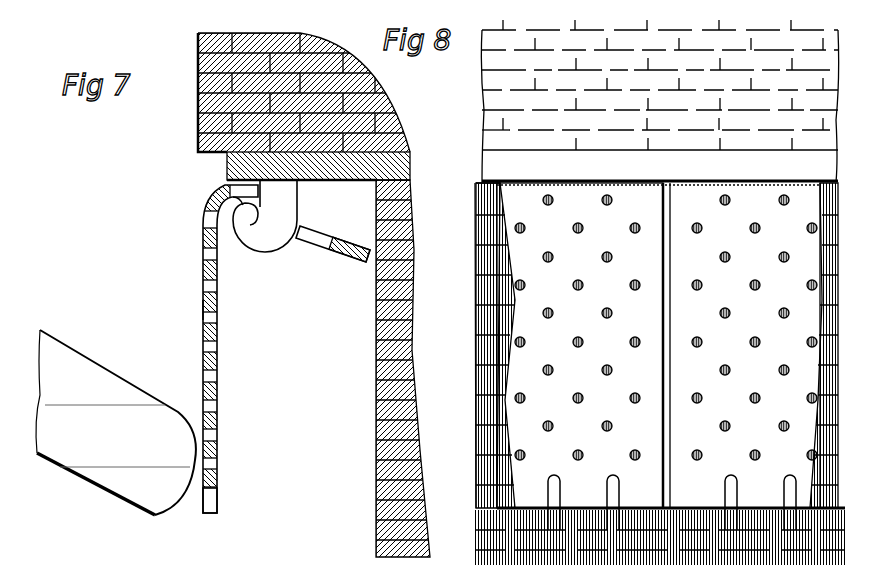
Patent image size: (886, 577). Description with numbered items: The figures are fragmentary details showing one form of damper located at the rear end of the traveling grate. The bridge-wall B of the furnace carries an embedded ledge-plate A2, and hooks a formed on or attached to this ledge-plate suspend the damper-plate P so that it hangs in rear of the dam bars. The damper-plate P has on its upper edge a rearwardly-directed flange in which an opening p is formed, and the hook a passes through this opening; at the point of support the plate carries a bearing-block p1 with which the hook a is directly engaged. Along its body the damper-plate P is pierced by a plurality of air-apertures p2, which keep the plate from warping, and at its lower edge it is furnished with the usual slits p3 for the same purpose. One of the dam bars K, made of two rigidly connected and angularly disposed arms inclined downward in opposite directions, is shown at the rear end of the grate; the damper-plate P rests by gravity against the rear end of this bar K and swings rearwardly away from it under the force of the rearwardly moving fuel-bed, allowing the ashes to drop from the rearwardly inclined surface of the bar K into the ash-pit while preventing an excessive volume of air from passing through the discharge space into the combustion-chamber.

In FIG. 7, the bridge-wall B is at (329, 48).
In FIG. 8, the bridge-wall B is at (791, 30).
In FIG. 7, the ledge-plate A2 is at (388, 165).
In FIG. 7, the damper-plate P is at (223, 353).
In FIG. 8, the damper-plate P is at (660, 374).
In FIG. 7, the bearing-block p1 is at (240, 210).
In FIG. 7, the air-aperture p2 is at (208, 308).
In FIG. 7, the slit p3 is at (220, 498).
In FIG. 8, the slit p3 is at (556, 512).
In FIG. 7, the hook a is at (283, 235).
In FIG. 8, the hook a is at (530, 181).
In FIG. 7, the bar K is at (113, 483).
In FIG. 8, the opening p is at (581, 403).